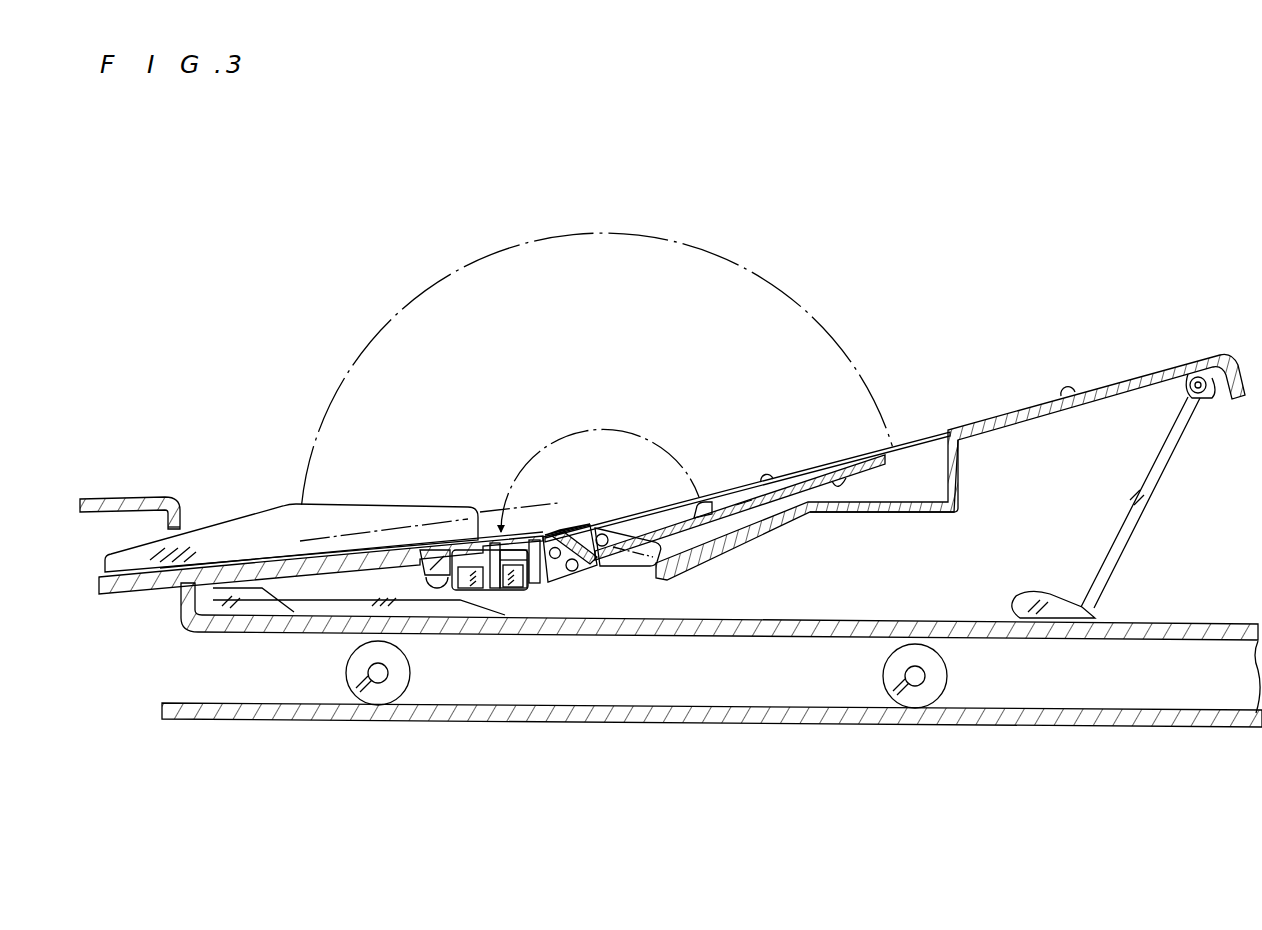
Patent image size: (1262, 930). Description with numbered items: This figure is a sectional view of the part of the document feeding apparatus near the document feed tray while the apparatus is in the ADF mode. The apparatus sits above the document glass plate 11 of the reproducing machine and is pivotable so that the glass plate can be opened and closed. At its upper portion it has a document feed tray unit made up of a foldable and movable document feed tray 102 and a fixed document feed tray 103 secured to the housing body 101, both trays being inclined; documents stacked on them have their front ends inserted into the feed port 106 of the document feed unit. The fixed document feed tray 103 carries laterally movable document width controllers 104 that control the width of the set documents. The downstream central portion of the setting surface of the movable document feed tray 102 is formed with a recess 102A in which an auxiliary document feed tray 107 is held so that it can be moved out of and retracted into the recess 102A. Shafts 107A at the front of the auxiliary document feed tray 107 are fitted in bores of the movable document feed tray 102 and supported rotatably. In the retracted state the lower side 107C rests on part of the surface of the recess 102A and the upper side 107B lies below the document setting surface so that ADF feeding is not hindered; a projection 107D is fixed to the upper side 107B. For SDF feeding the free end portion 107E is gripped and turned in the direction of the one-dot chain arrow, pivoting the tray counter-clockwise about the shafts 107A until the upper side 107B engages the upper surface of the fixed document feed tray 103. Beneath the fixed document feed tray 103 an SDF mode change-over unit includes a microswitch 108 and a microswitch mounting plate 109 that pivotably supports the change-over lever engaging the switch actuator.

The document glass plate 11 is at (213, 722).
The housing body 101 is at (124, 498).
The movable document feed tray 102 is at (1026, 404).
The recess 102A is at (916, 484).
The fixed document feed tray 103 is at (152, 594).
The document width controllers 104 is at (285, 502).
The feed port 106 is at (186, 524).
The auxiliary document feed tray 107 is at (789, 474).
The shafts 107A is at (617, 526).
The upper side 107B is at (744, 504).
The lower side 107C is at (857, 462).
The projection 107D is at (703, 500).
The free end portion 107E is at (890, 448).
The microswitch 108 is at (516, 591).
The microswitch mounting plate 109 is at (487, 591).